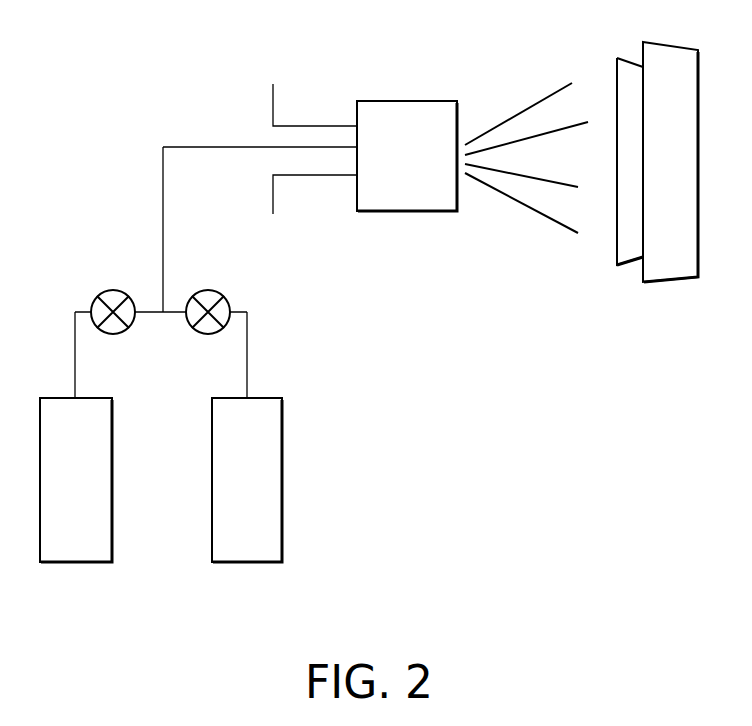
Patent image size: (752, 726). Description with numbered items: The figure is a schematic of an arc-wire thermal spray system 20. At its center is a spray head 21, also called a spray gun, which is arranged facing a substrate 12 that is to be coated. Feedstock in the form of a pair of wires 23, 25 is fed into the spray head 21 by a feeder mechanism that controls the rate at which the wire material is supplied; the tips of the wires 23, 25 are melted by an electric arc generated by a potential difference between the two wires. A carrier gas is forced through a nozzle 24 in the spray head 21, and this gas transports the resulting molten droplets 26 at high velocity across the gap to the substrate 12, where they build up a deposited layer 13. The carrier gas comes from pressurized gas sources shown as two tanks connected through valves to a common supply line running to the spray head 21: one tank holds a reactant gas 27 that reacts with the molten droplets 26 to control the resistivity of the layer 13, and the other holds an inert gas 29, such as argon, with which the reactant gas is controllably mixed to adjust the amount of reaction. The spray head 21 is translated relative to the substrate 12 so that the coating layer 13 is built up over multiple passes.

The thermal spray system 20 is at (95, 83).
The spray head 21 is at (423, 170).
The wire 23 is at (314, 124).
The wire 25 is at (314, 177).
The nozzle 24 is at (459, 146).
The molten droplets 26 is at (512, 241).
The layer 13 is at (617, 75).
The substrate 12 is at (688, 172).
The reactant gas 27 is at (263, 492).
The inert gas 29 is at (92, 492).